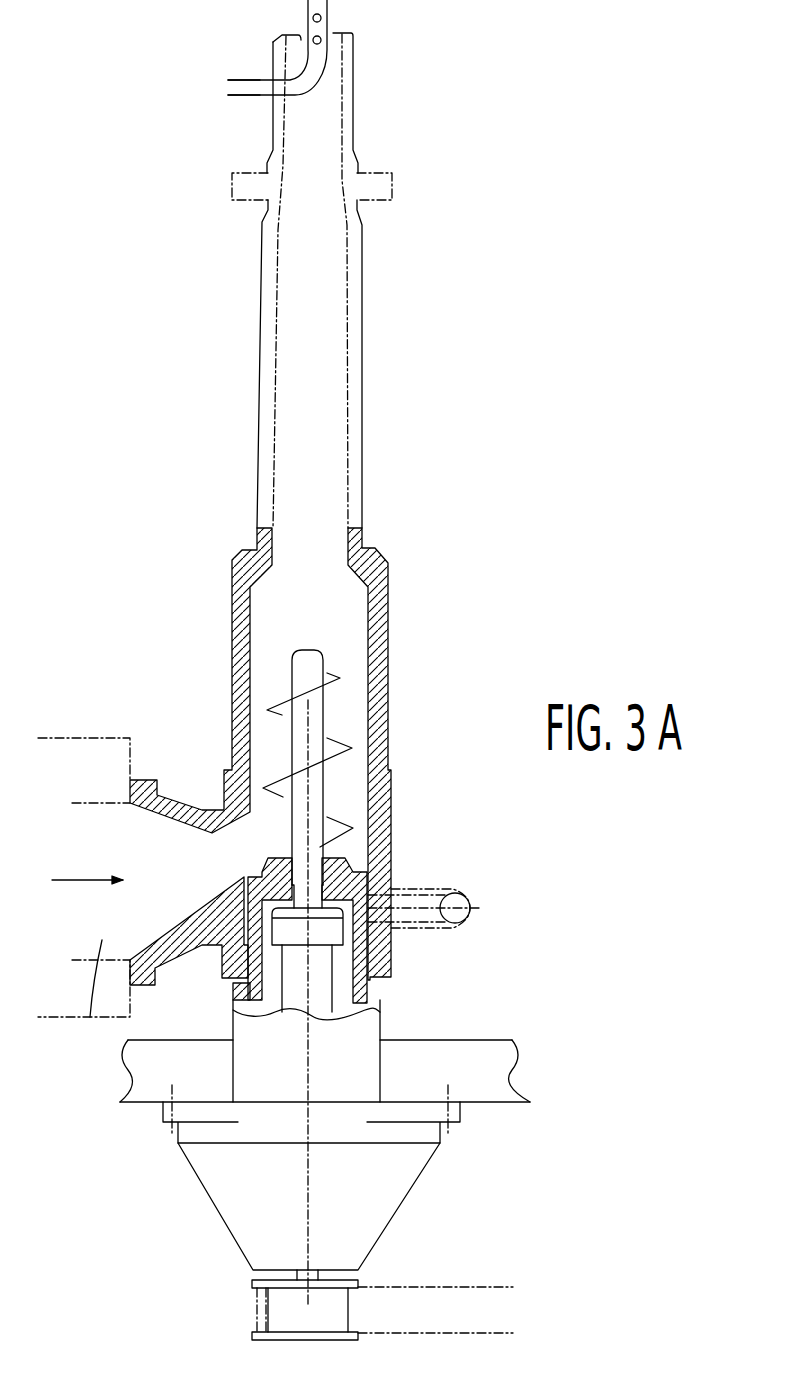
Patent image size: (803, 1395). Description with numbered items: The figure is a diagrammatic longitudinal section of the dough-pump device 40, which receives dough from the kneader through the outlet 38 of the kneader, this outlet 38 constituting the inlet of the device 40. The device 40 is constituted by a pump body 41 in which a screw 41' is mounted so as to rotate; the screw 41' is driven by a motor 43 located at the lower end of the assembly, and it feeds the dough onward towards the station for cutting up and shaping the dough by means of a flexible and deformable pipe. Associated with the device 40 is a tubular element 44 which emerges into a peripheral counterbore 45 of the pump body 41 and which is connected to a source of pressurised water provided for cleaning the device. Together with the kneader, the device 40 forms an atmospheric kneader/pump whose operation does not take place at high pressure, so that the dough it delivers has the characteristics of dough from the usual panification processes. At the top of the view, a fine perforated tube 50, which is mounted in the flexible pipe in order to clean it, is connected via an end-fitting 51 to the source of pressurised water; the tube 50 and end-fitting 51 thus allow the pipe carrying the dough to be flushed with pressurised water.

The outlet 38 is at (85, 1030).
The device 40 is at (190, 615).
The pump body 41 is at (401, 754).
The screw 41' is at (362, 767).
The motor 43 is at (400, 1193).
The tubular element 44 is at (472, 907).
The peripheral counterbore 45 is at (368, 880).
The fine perforated tube 50 is at (308, 23).
The end-fitting 51 is at (243, 93).